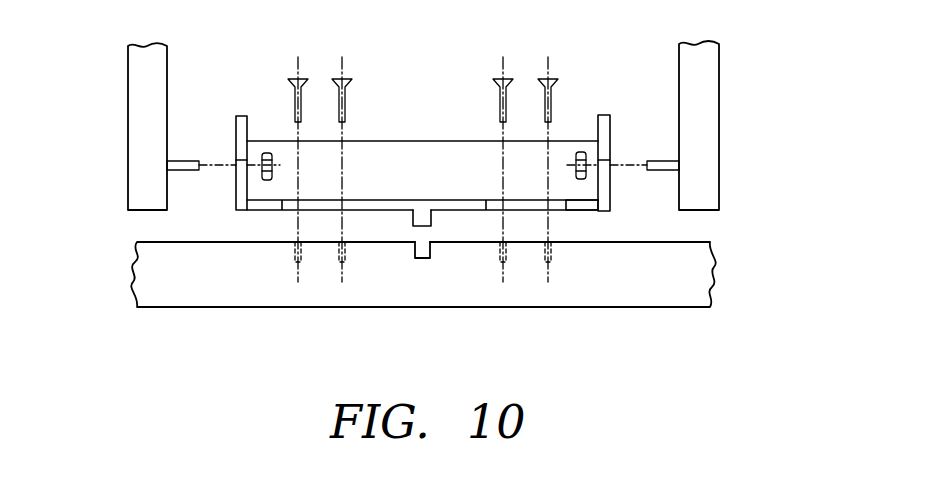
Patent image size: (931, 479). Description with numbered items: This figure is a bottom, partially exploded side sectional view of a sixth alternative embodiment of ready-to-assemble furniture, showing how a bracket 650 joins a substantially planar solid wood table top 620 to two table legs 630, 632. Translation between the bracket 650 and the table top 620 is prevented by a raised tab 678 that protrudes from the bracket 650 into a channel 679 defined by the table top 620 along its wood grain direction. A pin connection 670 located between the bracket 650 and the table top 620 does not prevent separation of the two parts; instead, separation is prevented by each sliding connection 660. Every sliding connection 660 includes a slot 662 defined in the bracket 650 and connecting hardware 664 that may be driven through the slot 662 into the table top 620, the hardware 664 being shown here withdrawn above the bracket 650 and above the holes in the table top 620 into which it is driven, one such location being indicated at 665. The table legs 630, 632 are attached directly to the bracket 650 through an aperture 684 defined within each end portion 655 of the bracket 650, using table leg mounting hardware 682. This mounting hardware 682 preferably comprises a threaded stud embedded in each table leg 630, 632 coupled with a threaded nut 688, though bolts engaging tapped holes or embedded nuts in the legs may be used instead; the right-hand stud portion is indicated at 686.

The table top 620 is at (697, 262).
The table leg 630 is at (710, 87).
The table leg 632 is at (138, 102).
The bracket 650 is at (380, 150).
The end portion of bracket 655 is at (243, 115).
The sliding connection 660 is at (352, 287).
The slot 662 is at (558, 212).
The connecting hardware 664 is at (538, 78).
The pin holes 665 is at (548, 250).
The pin connection 670 is at (427, 273).
The raised tab 678 is at (418, 212).
The channel 679 is at (427, 250).
The table leg mounting hardware 682 is at (262, 172).
The aperture 684 is at (605, 180).
The right pivot pin 686 is at (660, 160).
The threaded nut 688 is at (580, 150).